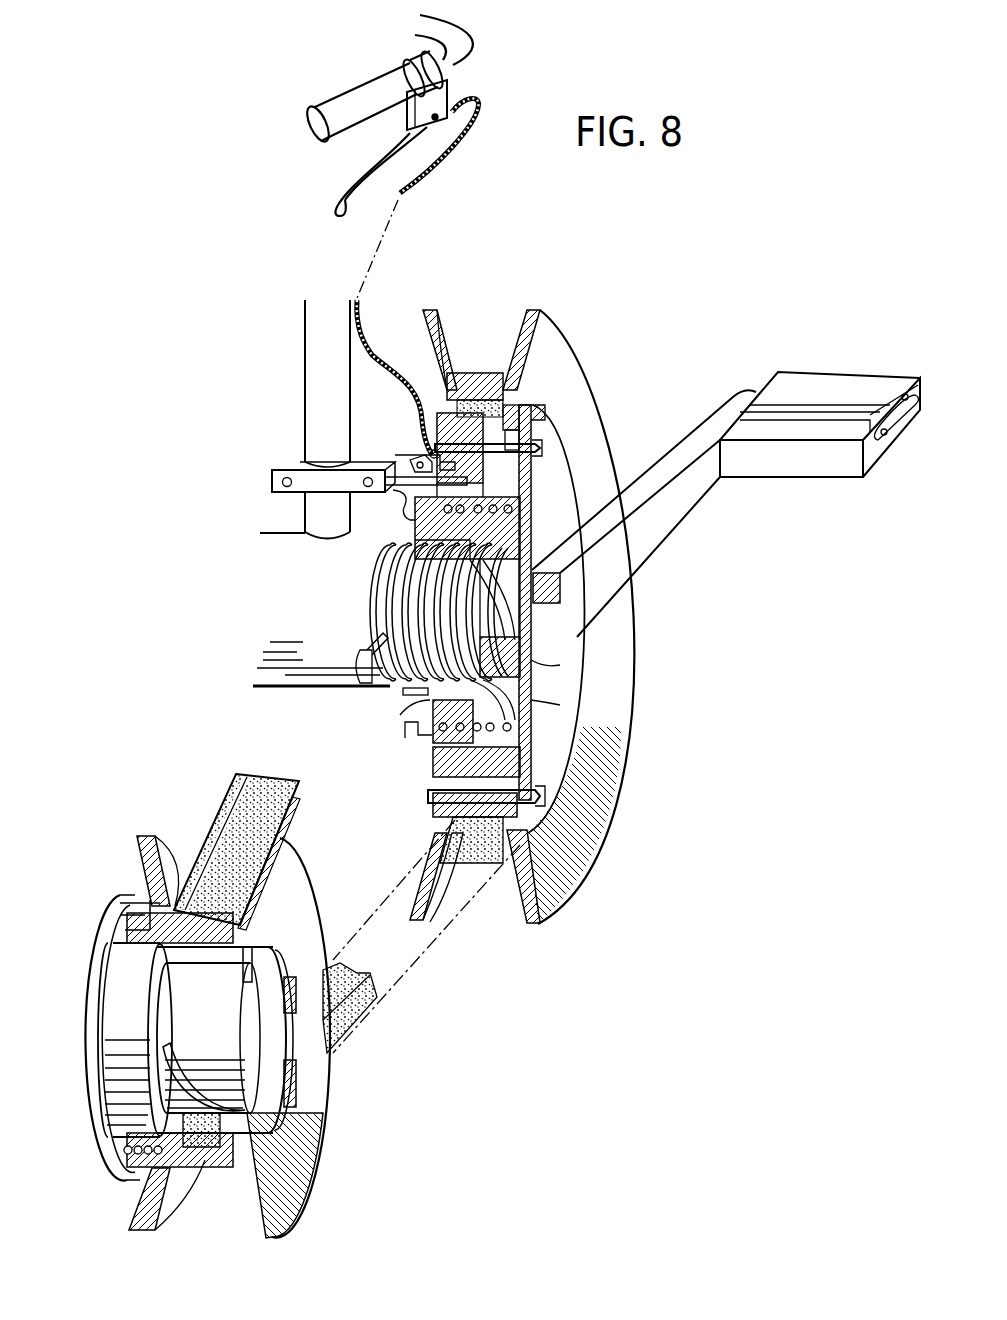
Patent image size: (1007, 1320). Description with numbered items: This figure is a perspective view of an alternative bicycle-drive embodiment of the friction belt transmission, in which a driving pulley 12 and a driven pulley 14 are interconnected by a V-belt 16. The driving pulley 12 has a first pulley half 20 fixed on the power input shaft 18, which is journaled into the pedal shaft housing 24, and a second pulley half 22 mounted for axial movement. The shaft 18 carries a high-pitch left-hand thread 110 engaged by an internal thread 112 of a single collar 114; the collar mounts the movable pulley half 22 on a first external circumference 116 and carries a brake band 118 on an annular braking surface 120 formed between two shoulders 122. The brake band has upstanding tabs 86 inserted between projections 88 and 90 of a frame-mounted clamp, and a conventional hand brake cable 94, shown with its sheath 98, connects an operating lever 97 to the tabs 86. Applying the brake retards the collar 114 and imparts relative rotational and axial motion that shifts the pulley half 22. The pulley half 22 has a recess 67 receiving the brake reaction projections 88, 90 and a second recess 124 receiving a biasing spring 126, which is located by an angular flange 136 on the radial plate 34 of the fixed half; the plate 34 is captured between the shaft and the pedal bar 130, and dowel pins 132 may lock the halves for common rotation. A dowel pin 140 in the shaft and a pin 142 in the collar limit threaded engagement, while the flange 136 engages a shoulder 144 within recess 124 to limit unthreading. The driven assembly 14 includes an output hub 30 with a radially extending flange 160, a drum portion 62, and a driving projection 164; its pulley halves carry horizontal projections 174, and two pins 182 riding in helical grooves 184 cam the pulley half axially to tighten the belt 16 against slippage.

The driving pulley 12 is at (619, 326).
The driven pulley 14 is at (382, 1130).
The V-belt 16 is at (495, 372).
The power input shaft 18 is at (540, 665).
The first pulley half 20 is at (630, 642).
The second pulley half 22 is at (450, 340).
The pedal shaft housing 24 is at (298, 645).
The hub or output shaft 30 is at (282, 1044).
The radial plate 34 is at (566, 549).
The brake drum 62 is at (118, 1012).
The recess 67 is at (445, 770).
The upstanding tabs 86 is at (422, 462).
The projection 88 is at (500, 475).
The projection 90 is at (290, 470).
The bicycle hand brake cable 94 is at (362, 300).
The operating lever 97 is at (302, 181).
The cable sheath 98 is at (362, 325).
The left-hand thread 110 is at (398, 603).
The internal thread 112 is at (395, 558).
The collar 114 is at (468, 688).
The first external circumference 116 is at (420, 543).
The brake band 118 is at (404, 510).
The annular braking surface 120 is at (420, 735).
The shoulders 122 is at (440, 760).
The second recess 124 is at (478, 735).
The biasing spring 126 is at (540, 705).
The pedal bar 130 is at (683, 495).
The dowel pins 132 is at (505, 420).
The angular flange 136 is at (522, 745).
The dowel pin 140 is at (360, 660).
The pin 142 is at (400, 695).
The shoulder 144 is at (400, 710).
The radially extending flange 160 is at (100, 972).
The driving projection 164 is at (213, 1015).
The horizontal projections 174 is at (300, 1085).
The pins 182 is at (248, 948).
The helical grooves 184 is at (200, 1085).